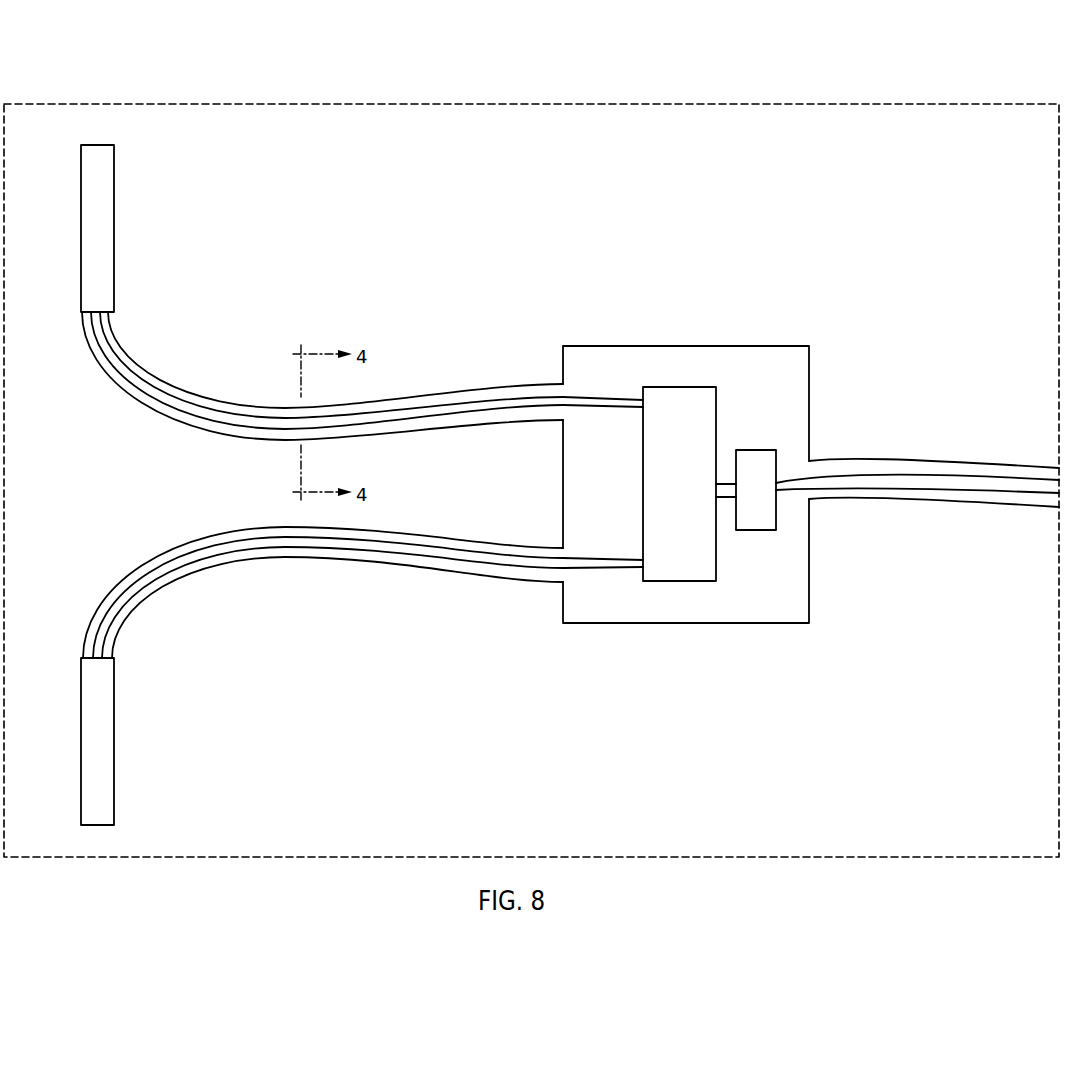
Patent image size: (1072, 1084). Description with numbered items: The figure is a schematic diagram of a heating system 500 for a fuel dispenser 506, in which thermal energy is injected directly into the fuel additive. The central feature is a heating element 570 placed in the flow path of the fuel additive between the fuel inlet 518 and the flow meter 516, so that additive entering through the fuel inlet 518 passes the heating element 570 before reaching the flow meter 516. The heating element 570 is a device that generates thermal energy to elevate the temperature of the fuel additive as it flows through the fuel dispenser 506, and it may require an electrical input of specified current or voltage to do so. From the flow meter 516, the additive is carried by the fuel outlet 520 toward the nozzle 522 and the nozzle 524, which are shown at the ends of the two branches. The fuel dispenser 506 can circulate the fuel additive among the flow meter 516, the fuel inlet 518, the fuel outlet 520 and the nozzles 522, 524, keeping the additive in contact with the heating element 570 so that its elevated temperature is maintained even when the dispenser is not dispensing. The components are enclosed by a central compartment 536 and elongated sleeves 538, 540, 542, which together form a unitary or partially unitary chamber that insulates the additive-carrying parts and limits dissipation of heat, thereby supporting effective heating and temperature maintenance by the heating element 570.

The heating system 500 is at (885, 233).
The fuel dispenser 506 is at (1030, 838).
The flow meter 516 is at (694, 498).
The fuel inlet 518 is at (784, 490).
The fuel outlet 520 is at (620, 405).
The nozzle 522 is at (143, 237).
The nozzle 524 is at (142, 760).
The central compartment 536 is at (781, 346).
The elongated sleeve 538 is at (928, 462).
The elongated sleeve 540 is at (475, 393).
The elongated sleeve 542 is at (450, 573).
The heating element 570 is at (771, 498).